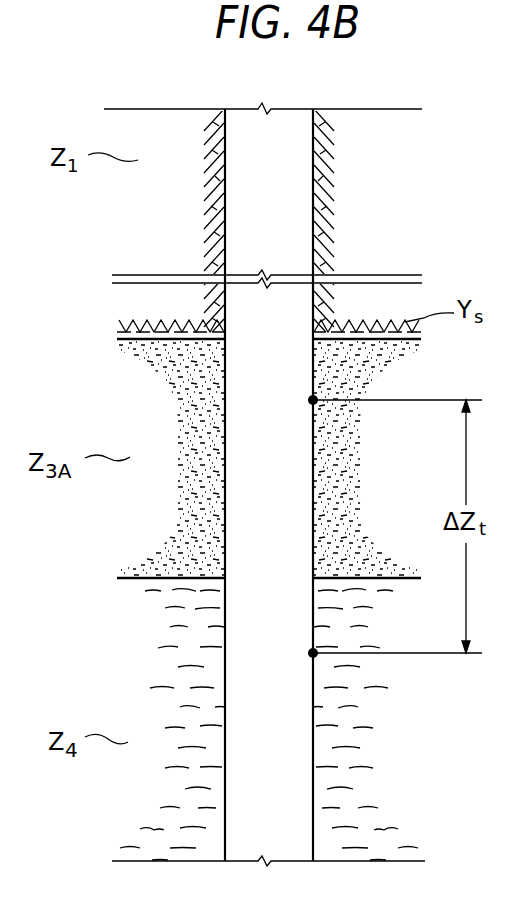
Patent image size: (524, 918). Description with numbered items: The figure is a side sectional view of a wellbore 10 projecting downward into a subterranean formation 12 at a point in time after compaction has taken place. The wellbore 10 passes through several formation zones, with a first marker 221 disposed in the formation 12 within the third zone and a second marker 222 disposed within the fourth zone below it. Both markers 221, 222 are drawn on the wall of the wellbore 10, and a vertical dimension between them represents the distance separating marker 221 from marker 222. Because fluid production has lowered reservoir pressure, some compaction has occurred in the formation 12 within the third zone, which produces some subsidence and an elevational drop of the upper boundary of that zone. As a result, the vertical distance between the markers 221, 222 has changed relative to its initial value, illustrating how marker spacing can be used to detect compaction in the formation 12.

The wellbore 10 is at (316, 787).
The subterranean formation 12 is at (94, 263).
The marker 221 is at (309, 400).
The marker 222 is at (309, 653).